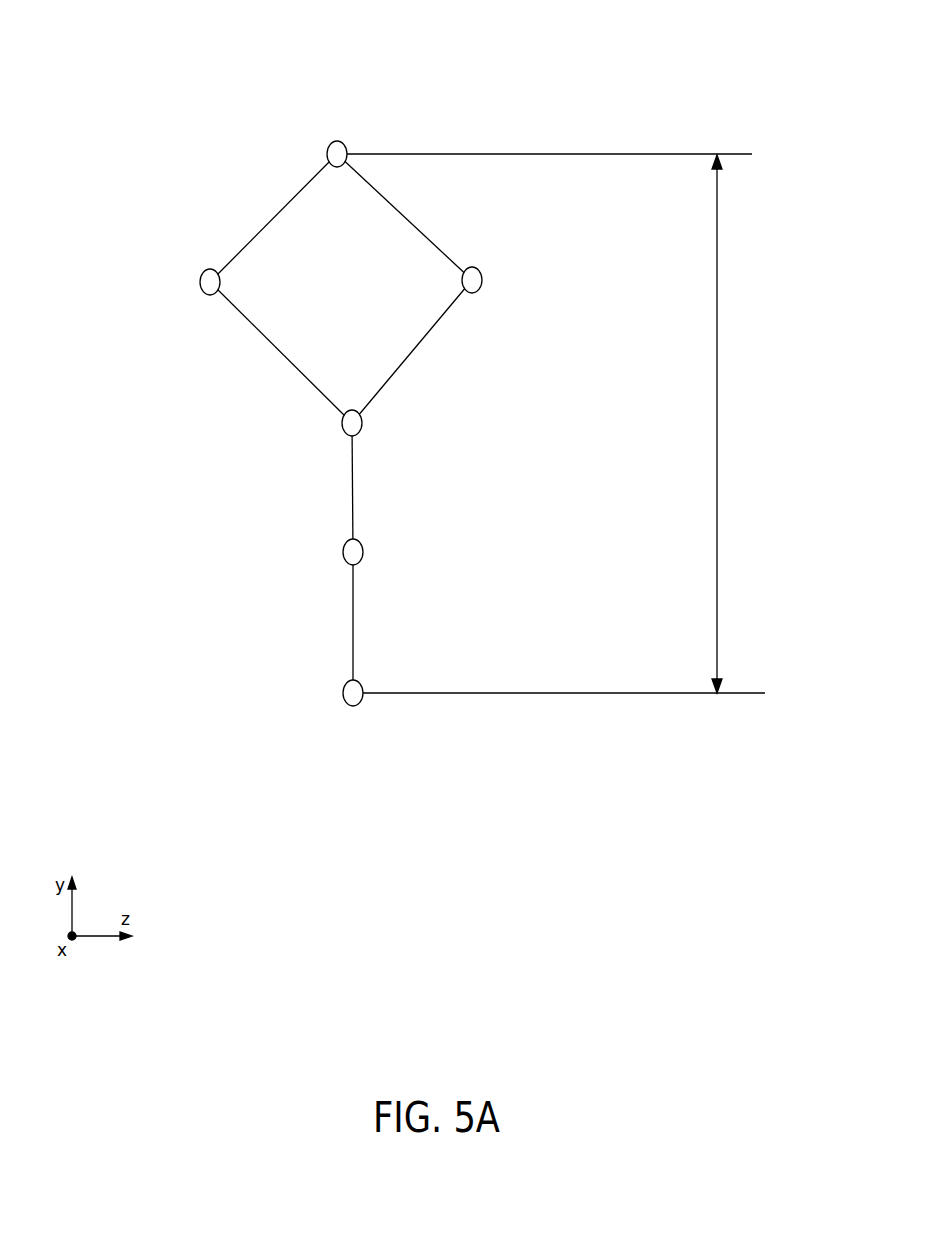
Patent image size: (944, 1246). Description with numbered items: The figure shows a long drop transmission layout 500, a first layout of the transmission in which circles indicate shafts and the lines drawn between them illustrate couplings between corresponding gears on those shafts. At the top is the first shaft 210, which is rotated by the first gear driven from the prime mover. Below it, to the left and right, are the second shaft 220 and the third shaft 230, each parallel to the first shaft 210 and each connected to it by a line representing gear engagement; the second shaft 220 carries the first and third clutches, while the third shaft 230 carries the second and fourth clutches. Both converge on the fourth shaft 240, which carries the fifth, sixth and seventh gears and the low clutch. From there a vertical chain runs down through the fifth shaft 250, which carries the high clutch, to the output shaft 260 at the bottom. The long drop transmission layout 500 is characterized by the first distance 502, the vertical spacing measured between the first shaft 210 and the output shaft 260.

The long drop transmission layout 500 is at (768, 45).
The first distance 502 is at (717, 260).
The first shaft 210 is at (331, 143).
The second shaft 220 is at (203, 273).
The third shaft 230 is at (481, 283).
The fourth shaft 240 is at (343, 425).
The fifth shaft 250 is at (344, 553).
The output shaft 260 is at (345, 691).